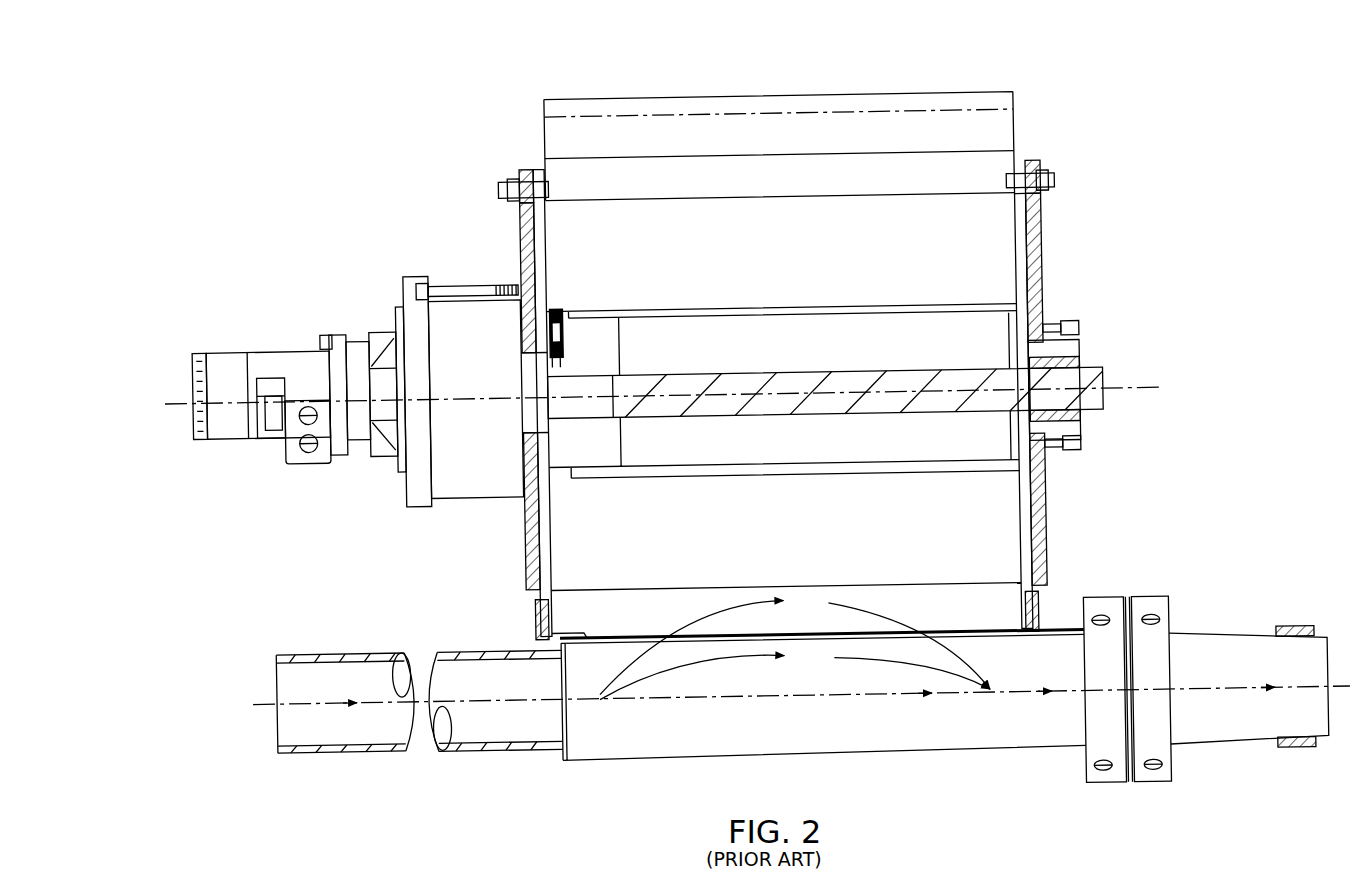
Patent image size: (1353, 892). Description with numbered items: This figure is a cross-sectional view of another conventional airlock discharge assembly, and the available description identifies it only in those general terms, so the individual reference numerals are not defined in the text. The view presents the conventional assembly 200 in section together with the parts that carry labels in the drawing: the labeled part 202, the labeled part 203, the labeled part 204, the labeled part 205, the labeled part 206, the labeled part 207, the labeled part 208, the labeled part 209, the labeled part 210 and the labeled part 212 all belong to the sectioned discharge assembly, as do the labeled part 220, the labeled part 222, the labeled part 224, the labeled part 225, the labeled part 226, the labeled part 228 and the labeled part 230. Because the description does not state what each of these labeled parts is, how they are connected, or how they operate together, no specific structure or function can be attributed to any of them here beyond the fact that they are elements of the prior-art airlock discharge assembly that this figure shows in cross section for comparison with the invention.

The rotary screen apparatus 200 is at (718, 359).
The screen assembly 202 is at (1099, 309).
The outer cylindrical screen drum 203 is at (746, 147).
The shaft 204 is at (825, 377).
The end plates 205 is at (785, 400).
The inner cylinder 206 is at (783, 368).
The motor and gearbox 207 is at (370, 393).
The screen drum wall 208 is at (780, 179).
The drum bottom wall 209 is at (786, 612).
The inlet opening 210 is at (818, 655).
The drum upper region 212 is at (778, 97).
The inlet pipe assembly 220 is at (800, 619).
The inlet pipe 222 is at (346, 730).
The pipe section 224 is at (496, 728).
The inlet duct 225 is at (824, 720).
The outlet cone 226 is at (1249, 706).
The flange 228 is at (1170, 704).
The flow path 230 is at (805, 673).